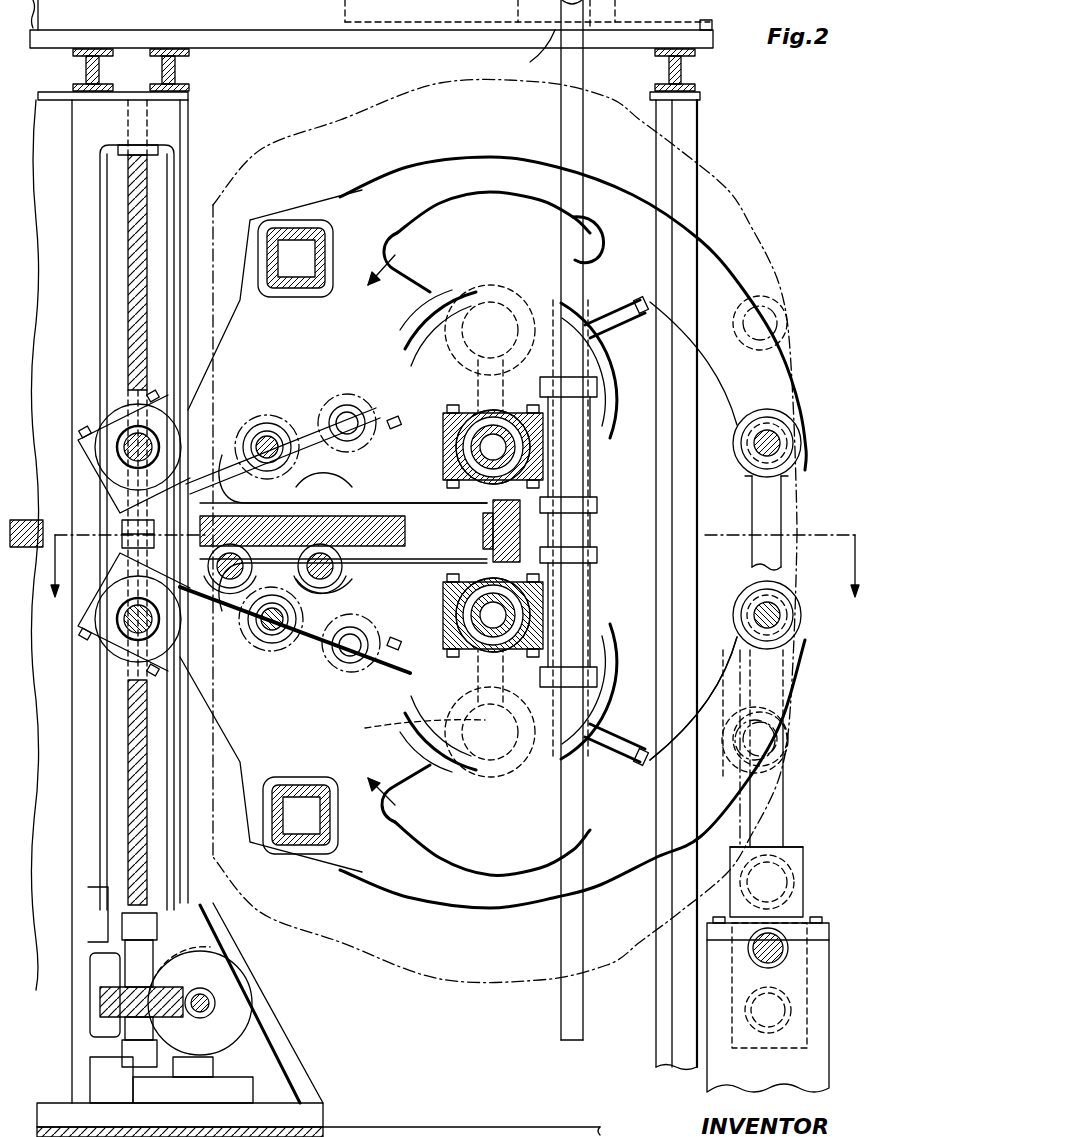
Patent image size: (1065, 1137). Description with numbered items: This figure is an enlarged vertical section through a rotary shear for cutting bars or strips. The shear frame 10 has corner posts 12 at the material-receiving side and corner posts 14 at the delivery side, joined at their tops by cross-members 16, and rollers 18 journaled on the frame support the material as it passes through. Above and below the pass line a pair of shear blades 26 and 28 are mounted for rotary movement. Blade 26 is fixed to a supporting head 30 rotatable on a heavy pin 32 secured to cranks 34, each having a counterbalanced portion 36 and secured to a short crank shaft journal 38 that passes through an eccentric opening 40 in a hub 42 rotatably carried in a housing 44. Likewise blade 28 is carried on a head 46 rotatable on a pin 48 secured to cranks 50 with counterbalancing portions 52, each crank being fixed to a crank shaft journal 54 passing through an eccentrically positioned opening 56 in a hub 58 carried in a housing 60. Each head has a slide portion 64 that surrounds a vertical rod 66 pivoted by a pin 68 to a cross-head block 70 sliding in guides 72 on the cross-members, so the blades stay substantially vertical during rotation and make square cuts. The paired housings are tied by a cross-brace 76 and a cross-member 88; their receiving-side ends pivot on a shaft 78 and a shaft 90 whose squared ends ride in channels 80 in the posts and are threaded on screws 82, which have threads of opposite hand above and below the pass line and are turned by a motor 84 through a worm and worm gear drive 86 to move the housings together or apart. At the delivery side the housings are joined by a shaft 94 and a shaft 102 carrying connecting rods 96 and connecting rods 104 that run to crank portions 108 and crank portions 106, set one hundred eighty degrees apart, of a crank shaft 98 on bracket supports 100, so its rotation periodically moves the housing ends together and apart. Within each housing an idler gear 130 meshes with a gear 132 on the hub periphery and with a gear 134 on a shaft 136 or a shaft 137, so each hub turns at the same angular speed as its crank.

The shear frame 10 is at (495, 1122).
The corner posts 12 is at (80, 183).
The corner posts 14 is at (700, 148).
The cross-members 16 is at (155, 67).
The rollers 18 is at (342, 563).
The shear blade 26 is at (512, 516).
The shear blade 28 is at (493, 534).
The supporting head 30 is at (485, 502).
The pin 32 is at (455, 408).
The cranks 34 is at (395, 365).
The counterbalanced portion 36 is at (410, 236).
The crank shaft journal 38 is at (488, 300).
The eccentric opening 40 is at (561, 240).
The hub 42 is at (492, 346).
The housing 44 is at (475, 183).
The head 46 is at (448, 656).
The pin 48 is at (592, 575).
The cranks 50 is at (450, 734).
The counterbalancing portions 52 is at (455, 854).
The crank shaft journal 54 is at (400, 724).
The eccentrically positioned opening 56 is at (405, 730).
The hub 58 is at (492, 714).
The housing 60 is at (496, 908).
The slide portion 64 is at (597, 505).
The rod 66 is at (572, 145).
The pin 68 is at (591, 36).
The cross-head block 70 is at (526, 56).
The guides 72 is at (396, 48).
The cross-brace 76 is at (290, 233).
The shaft 78 is at (120, 434).
The channels 80 is at (118, 350).
The screws 82 is at (128, 756).
The motor 84 is at (240, 970).
The worm and worm gear drive 86 is at (190, 1000).
The cross-member 88 is at (282, 846).
The shaft 90 is at (105, 586).
The shaft 94 is at (780, 420).
The connecting rods 96 is at (780, 497).
The crank shaft 98 is at (802, 880).
The bracket supports 100 is at (820, 1065).
The shaft 102 is at (787, 592).
The connecting rods 104 is at (775, 803).
The crank portions 106 is at (790, 843).
The crank portions 108 is at (795, 932).
The idler gear 130 is at (328, 373).
The gear 132 is at (354, 394).
The gear 134 is at (237, 420).
The shaft 136 is at (270, 415).
The shaft 137 is at (256, 630).